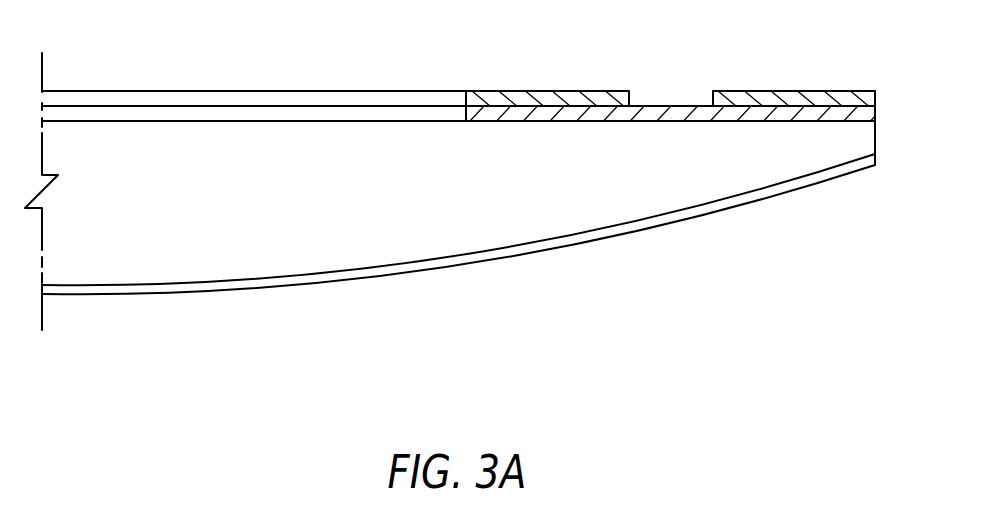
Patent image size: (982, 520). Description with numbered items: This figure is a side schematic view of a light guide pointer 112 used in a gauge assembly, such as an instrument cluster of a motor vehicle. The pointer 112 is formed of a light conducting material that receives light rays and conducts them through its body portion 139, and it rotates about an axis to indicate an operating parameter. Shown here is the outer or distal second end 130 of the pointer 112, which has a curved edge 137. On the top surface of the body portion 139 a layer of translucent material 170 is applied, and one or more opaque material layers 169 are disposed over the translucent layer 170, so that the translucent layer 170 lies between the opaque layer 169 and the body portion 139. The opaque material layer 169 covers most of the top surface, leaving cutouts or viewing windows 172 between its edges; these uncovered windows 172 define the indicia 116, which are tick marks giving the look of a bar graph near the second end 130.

The pointer 112 is at (168, 90).
The indicia 116 is at (647, 83).
The second end 130 is at (860, 150).
The curved edge 137 is at (875, 125).
The body portion 139 is at (245, 255).
The opaque material layer 169 is at (547, 92).
The translucent material layer 170 is at (737, 123).
The viewing windows 172 is at (220, 121).